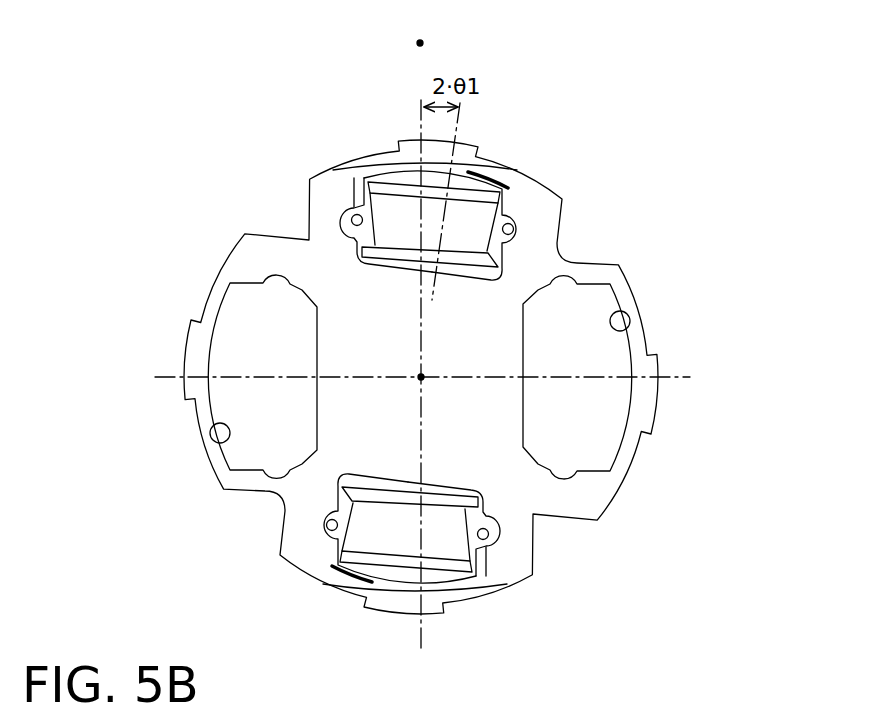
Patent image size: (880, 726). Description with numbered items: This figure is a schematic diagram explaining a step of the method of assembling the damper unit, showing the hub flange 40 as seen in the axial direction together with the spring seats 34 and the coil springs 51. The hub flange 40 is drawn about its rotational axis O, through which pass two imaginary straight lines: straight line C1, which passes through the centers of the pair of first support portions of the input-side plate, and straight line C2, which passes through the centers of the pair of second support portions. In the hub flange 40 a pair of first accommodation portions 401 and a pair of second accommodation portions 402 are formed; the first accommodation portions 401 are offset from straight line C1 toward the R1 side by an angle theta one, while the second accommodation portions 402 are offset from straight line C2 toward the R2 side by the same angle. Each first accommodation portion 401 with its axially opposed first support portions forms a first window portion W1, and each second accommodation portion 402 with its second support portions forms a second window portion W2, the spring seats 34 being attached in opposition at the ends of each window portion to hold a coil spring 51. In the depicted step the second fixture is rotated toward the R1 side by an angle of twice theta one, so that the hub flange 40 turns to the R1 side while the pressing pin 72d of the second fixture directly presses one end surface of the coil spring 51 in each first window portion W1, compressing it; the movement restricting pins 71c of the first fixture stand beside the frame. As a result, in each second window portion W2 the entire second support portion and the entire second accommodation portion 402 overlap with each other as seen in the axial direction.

The spring seat 34 is at (377, 173).
The hub flange 40 is at (638, 276).
The coil spring 51 is at (388, 256).
The movement restricting pin 71c is at (513, 190).
The pressing pin 72d is at (345, 228).
The first accommodation portion 401 is at (518, 226).
The second accommodation portion 402 is at (629, 322).
The straight line C1 is at (412, 122).
The straight line C2 is at (690, 377).
The rotational axis O is at (439, 241).
The first side in the rotational direction R1 is at (420, 43).
The second side in the rotational direction R2 is at (420, 43).
The first window portion W1 is at (332, 196).
The second window portion W2 is at (226, 467).